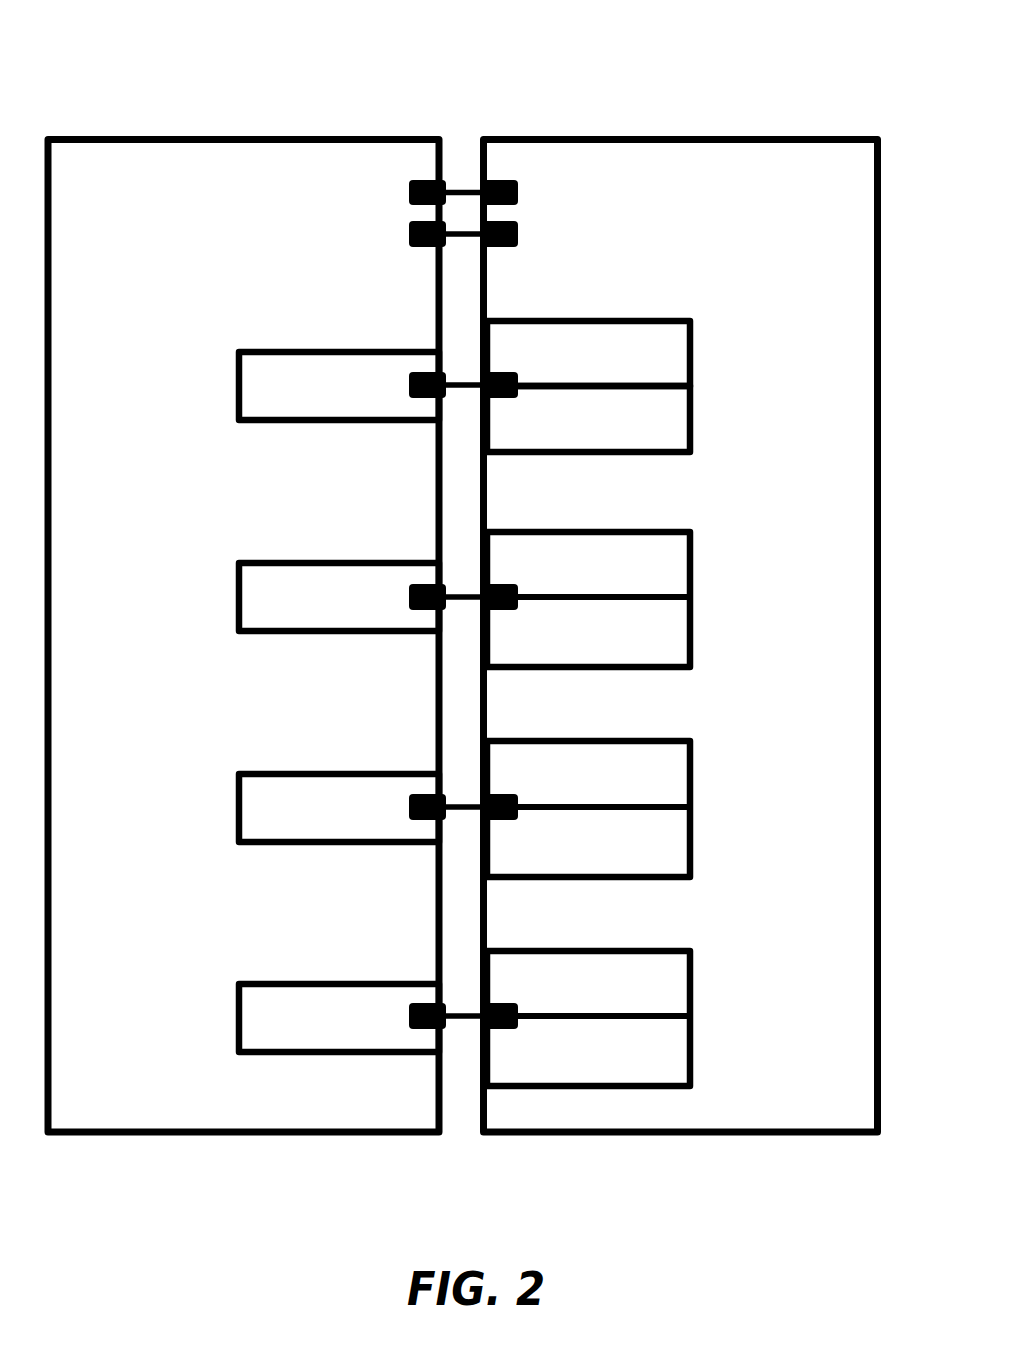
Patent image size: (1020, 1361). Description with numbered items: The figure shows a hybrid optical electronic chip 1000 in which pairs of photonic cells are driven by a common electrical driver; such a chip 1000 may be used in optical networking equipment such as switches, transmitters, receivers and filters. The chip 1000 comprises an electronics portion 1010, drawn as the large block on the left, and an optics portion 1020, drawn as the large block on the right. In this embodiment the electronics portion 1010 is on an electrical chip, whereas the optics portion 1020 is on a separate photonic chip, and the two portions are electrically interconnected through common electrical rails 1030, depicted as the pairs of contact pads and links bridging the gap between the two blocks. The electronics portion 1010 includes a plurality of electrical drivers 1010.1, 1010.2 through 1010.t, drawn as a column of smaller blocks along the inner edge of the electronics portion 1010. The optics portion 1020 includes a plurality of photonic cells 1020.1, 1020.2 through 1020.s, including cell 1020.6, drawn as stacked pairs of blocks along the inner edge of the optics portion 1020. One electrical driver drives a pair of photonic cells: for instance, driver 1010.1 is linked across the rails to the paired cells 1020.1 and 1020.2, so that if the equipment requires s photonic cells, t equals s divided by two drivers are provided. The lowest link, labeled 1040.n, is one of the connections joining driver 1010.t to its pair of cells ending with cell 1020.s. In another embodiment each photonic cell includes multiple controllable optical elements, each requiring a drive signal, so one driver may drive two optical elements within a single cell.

The hybrid optical electronic chip 1000 is at (172, 75).
The electronics portion 1010 is at (358, 136).
The optics portion 1020 is at (580, 137).
The common electrical rails 1030 is at (477, 232).
The electrical driver 1010.1 is at (238, 353).
The electrical driver 1010.2 is at (235, 598).
The electrical driver 1010.t is at (237, 1037).
The photonic cell 1020.1 is at (690, 320).
The photonic cell 1020.2 is at (693, 427).
The photonic cell 1020.6 is at (693, 848).
The photonic cell 1020.s is at (693, 1057).
The n-th connection 1040.n is at (467, 1038).